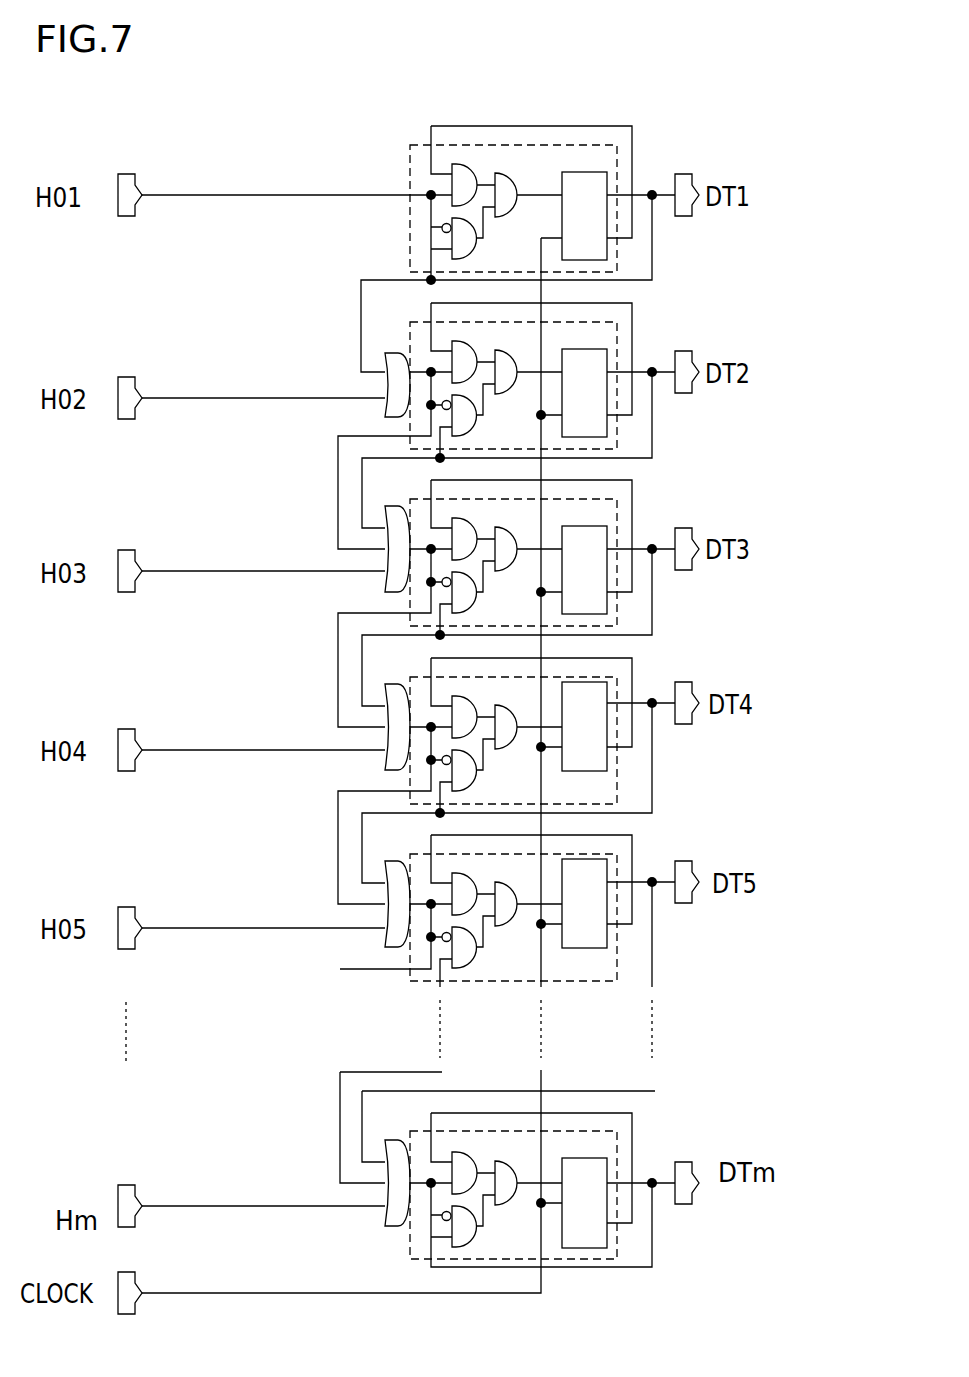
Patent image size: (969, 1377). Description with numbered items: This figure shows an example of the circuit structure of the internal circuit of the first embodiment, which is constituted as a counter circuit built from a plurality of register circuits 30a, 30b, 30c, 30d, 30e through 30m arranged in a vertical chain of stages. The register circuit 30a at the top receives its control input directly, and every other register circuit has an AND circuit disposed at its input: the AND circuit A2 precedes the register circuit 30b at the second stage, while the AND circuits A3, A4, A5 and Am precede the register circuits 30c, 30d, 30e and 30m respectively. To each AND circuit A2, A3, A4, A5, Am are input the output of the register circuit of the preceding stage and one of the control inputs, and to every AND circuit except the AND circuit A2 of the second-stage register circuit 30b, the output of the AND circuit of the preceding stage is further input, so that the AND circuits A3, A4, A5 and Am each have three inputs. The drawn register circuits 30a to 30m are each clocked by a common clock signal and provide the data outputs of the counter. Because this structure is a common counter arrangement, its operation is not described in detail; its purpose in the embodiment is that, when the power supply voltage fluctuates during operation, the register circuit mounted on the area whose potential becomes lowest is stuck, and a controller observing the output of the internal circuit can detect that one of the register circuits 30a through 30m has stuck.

The register circuit 30a is at (424, 244).
The register circuit 30b is at (523, 421).
The register circuit 30c is at (528, 596).
The register circuit 30d is at (531, 762).
The register circuit 30e is at (533, 894).
The register circuit 30m is at (536, 1169).
The AND circuit A2 is at (362, 393).
The AND circuit A3 is at (362, 557).
The AND circuit A4 is at (362, 735).
The AND circuit A5 is at (361, 915).
The AND circuit Am is at (357, 1192).